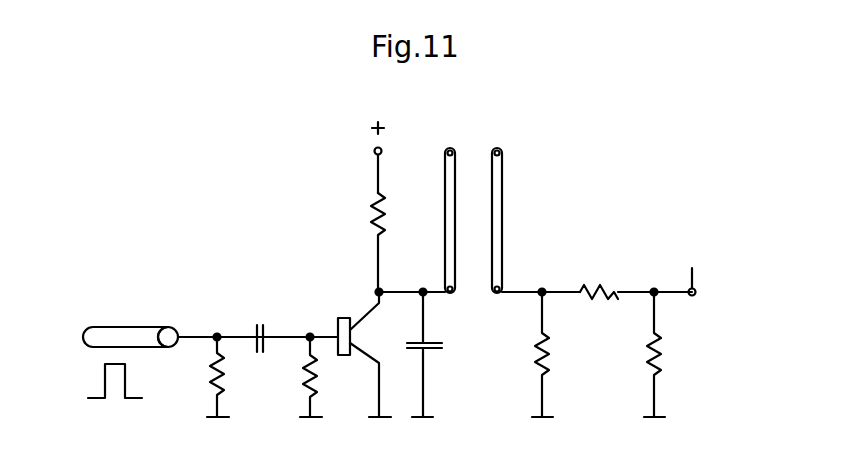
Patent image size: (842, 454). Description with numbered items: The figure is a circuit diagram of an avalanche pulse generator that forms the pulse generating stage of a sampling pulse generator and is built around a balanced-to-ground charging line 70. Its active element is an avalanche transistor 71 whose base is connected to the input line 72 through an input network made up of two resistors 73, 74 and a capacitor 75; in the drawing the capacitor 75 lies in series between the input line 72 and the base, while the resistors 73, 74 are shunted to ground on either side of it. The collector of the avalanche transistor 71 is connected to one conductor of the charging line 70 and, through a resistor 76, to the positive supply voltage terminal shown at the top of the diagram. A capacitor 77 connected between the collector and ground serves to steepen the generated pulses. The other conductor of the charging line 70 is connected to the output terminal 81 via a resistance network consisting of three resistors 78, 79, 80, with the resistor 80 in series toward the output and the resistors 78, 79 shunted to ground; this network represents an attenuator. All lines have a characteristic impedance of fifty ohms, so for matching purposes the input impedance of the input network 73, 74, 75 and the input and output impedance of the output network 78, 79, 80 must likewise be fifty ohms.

The charging line 70 is at (482, 213).
The avalanche transistor 71 is at (347, 317).
The input line 72 is at (135, 335).
The resistor 73 is at (227, 385).
The resistor 74 is at (320, 383).
The capacitor 75 is at (257, 328).
The resistor 76 is at (370, 216).
The capacitor 77 is at (437, 352).
The resistor 78 is at (550, 362).
The resistor 79 is at (665, 360).
The resistor 80 is at (598, 275).
The output terminal 81 is at (690, 267).